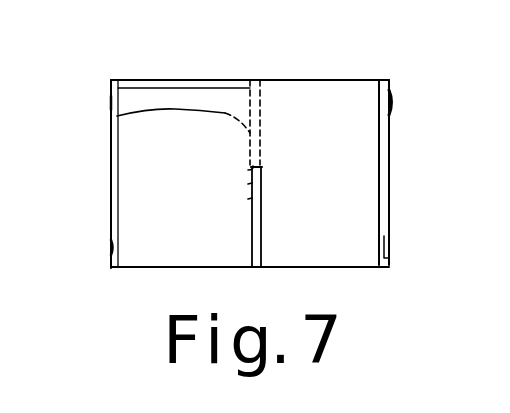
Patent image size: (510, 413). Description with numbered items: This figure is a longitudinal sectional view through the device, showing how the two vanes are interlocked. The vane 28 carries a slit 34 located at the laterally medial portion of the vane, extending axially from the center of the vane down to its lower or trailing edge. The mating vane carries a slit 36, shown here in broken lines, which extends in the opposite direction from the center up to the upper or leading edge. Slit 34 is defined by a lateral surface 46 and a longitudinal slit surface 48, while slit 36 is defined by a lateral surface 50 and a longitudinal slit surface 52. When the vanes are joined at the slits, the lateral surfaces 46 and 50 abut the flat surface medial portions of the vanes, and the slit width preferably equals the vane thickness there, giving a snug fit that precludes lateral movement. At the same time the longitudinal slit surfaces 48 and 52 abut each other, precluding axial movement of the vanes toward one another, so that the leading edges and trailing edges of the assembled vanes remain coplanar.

The vane 28 is at (190, 157).
The slit 34 is at (250, 268).
The slit 36 is at (258, 107).
The lateral surface 46 is at (250, 199).
The longitudinal slit surface 48 is at (110, 118).
The lateral surface 50 is at (250, 184).
The longitudinal slit surface 52 is at (248, 170).